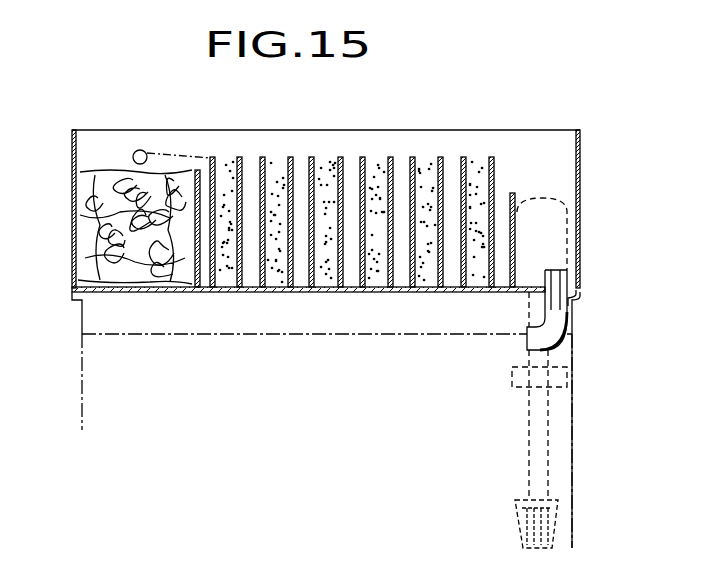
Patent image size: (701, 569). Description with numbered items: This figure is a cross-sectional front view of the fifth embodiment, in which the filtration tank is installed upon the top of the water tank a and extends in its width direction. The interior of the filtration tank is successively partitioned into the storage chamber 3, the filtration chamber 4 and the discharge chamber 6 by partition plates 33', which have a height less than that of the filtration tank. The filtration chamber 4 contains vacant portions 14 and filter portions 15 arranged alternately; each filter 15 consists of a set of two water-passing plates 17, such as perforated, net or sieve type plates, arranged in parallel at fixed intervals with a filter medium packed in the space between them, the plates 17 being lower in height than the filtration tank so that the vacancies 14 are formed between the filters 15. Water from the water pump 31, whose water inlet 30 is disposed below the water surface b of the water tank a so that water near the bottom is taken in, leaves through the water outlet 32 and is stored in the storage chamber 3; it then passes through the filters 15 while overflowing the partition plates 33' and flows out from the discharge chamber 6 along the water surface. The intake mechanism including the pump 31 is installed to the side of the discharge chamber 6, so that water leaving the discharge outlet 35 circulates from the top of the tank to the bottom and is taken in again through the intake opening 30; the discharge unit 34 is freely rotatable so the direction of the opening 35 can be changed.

The storage chamber 3 is at (132, 201).
The filtration chamber 4 is at (236, 153).
The water discharge chamber 6 is at (542, 160).
The vacant portions 14 is at (302, 158).
The filter portions 15 is at (323, 162).
The water-passing plates 17 is at (410, 173).
The water inlet 30 is at (523, 527).
The water pump 31 is at (567, 225).
The water outlet 32 is at (141, 150).
The partition plates 33' is at (190, 331).
The discharge unit 34 is at (556, 279).
The discharge outlet 35 is at (526, 340).
The water tank a is at (82, 364).
The water surface b is at (100, 333).